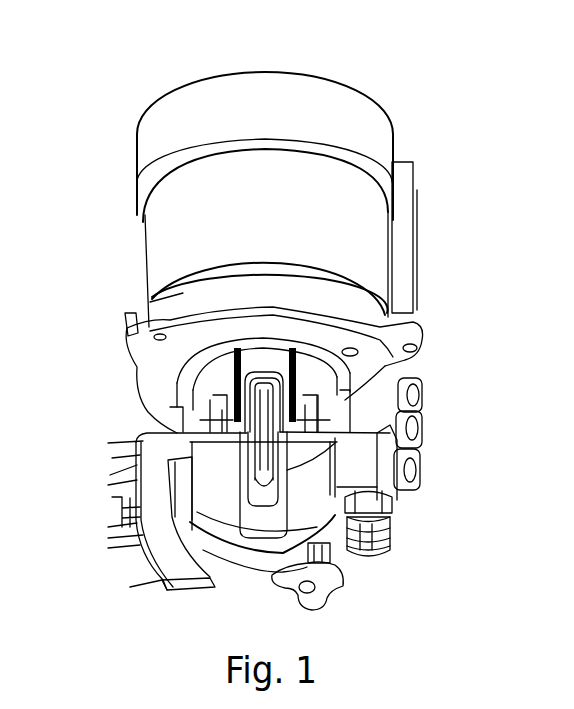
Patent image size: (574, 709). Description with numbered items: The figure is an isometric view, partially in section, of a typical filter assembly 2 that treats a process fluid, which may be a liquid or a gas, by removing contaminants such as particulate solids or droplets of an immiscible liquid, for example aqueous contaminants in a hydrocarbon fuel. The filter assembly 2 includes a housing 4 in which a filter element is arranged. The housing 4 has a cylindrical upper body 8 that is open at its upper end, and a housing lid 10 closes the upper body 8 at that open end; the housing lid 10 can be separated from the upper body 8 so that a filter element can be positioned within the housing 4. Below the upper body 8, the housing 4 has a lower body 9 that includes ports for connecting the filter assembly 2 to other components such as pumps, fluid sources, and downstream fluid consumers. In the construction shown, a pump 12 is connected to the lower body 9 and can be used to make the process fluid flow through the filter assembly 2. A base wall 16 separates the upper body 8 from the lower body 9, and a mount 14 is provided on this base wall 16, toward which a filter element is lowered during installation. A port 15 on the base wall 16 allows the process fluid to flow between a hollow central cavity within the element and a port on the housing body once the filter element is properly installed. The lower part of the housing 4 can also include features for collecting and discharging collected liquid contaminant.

The filter assembly 2 is at (428, 68).
The housing 4 is at (153, 240).
The cylindrical upper body 8 is at (223, 233).
The lower body 9 is at (347, 511).
The housing lid 10 is at (289, 66).
The pump 12 is at (116, 436).
The mount 14 is at (317, 452).
The port 15 is at (380, 375).
The base wall 16 is at (247, 447).